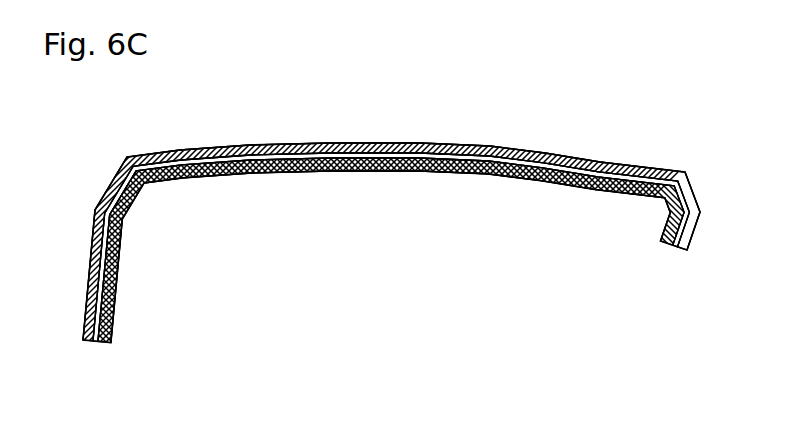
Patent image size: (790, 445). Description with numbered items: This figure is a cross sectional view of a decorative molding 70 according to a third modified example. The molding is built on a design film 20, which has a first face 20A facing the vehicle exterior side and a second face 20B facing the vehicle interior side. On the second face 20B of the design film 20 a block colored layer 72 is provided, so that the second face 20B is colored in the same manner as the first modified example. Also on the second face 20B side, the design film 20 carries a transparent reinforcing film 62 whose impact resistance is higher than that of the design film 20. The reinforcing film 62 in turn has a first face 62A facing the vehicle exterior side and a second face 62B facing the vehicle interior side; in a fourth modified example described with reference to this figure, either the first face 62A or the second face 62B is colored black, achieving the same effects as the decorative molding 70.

The decorative molding 70 is at (635, 128).
The design film 20 is at (505, 145).
The first face 20A is at (330, 143).
The second face 20B is at (377, 156).
The block colored layer 72 is at (265, 160).
The transparent reinforcing film 62 is at (476, 168).
The first face 62A is at (577, 163).
The second face 62B is at (572, 186).